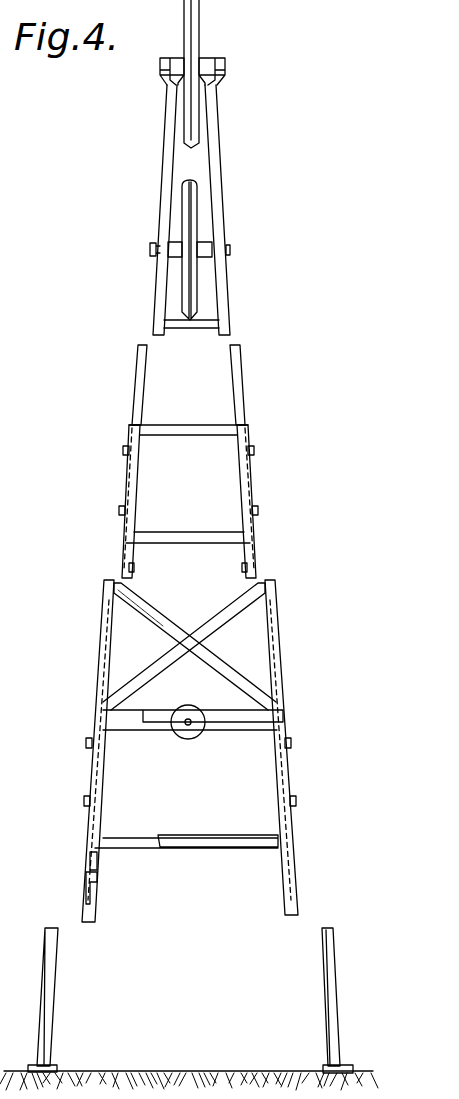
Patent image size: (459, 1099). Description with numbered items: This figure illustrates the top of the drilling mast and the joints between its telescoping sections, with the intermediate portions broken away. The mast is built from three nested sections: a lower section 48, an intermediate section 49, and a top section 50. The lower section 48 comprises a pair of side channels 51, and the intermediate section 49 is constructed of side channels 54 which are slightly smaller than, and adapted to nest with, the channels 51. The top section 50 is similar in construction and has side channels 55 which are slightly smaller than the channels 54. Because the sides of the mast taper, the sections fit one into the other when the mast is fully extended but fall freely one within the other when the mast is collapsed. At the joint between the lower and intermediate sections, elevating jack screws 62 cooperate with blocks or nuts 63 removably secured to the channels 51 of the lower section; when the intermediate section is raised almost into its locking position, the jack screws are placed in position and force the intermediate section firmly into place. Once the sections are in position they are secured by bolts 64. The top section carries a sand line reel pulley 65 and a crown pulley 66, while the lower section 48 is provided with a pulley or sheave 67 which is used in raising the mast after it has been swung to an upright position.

The lower section 48 is at (322, 938).
The intermediate section 49 is at (257, 545).
The top section 50 is at (236, 229).
The side channels 51 is at (58, 967).
The side channels 54 is at (139, 378).
The side channels 55 is at (163, 185).
The elevating jack screws 62 is at (98, 863).
The blocks or nuts 63 is at (97, 882).
The bolts 64 is at (84, 801).
The sand line reel pulley 65 is at (197, 290).
The crown pulley 66 is at (199, 40).
The pulley or sheave 67 is at (194, 739).